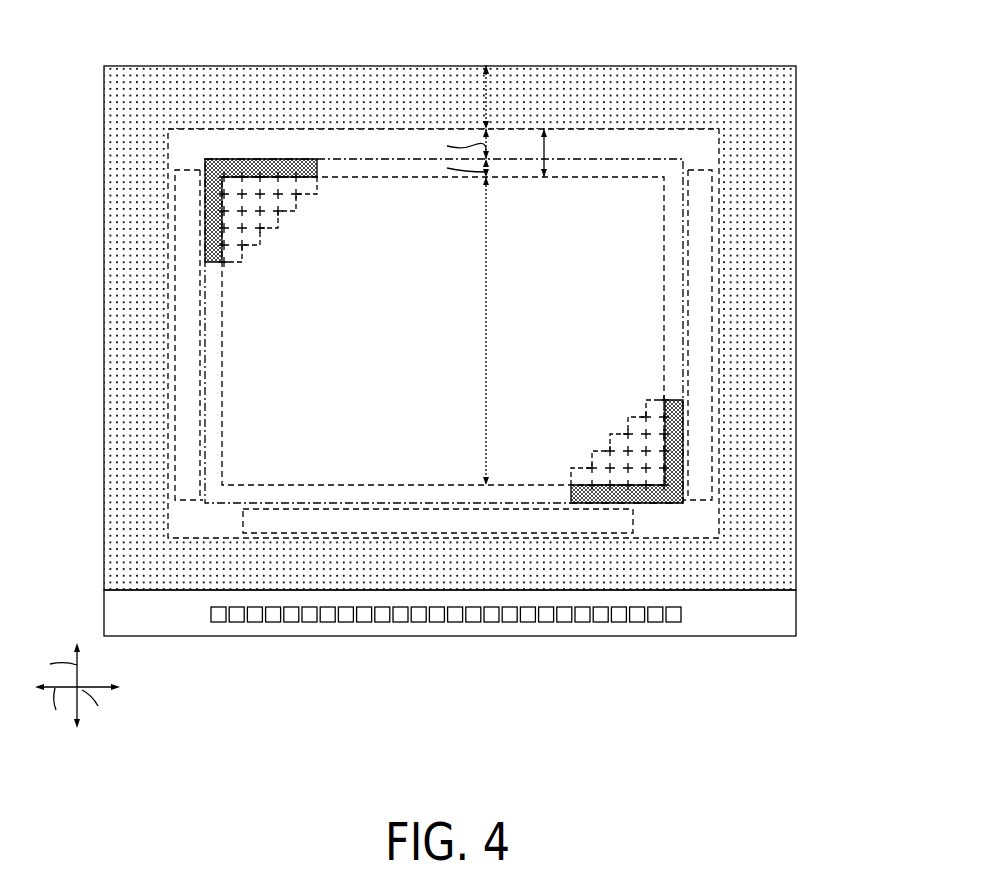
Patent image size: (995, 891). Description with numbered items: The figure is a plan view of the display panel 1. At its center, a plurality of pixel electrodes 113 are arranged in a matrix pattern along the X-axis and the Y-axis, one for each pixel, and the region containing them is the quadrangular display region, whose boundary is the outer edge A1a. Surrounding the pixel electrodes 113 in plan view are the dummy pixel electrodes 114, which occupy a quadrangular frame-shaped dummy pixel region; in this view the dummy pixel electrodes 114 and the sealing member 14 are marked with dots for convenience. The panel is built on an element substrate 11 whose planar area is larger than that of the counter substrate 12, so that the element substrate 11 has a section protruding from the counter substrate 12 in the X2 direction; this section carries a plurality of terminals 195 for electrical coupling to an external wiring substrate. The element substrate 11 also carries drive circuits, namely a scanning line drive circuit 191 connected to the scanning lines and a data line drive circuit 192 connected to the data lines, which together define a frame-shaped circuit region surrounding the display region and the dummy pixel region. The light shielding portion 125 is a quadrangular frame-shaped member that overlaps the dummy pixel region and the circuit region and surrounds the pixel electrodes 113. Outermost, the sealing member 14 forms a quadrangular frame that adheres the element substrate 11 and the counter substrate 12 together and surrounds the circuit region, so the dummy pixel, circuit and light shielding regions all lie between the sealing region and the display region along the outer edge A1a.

The display panel 1 is at (822, 112).
The element substrate 11 is at (747, 643).
The counter substrate 12 is at (742, 598).
The sealing member 14 is at (810, 397).
The light shielding portion 125 is at (730, 425).
The outer edge of the display region A1a is at (665, 245).
The pixel electrode 113 is at (281, 215).
The dummy pixel electrode 114 is at (318, 193).
The scanning line drive circuit 191 is at (197, 500).
The data line drive circuit 192 is at (240, 524).
The terminal 195 is at (253, 614).